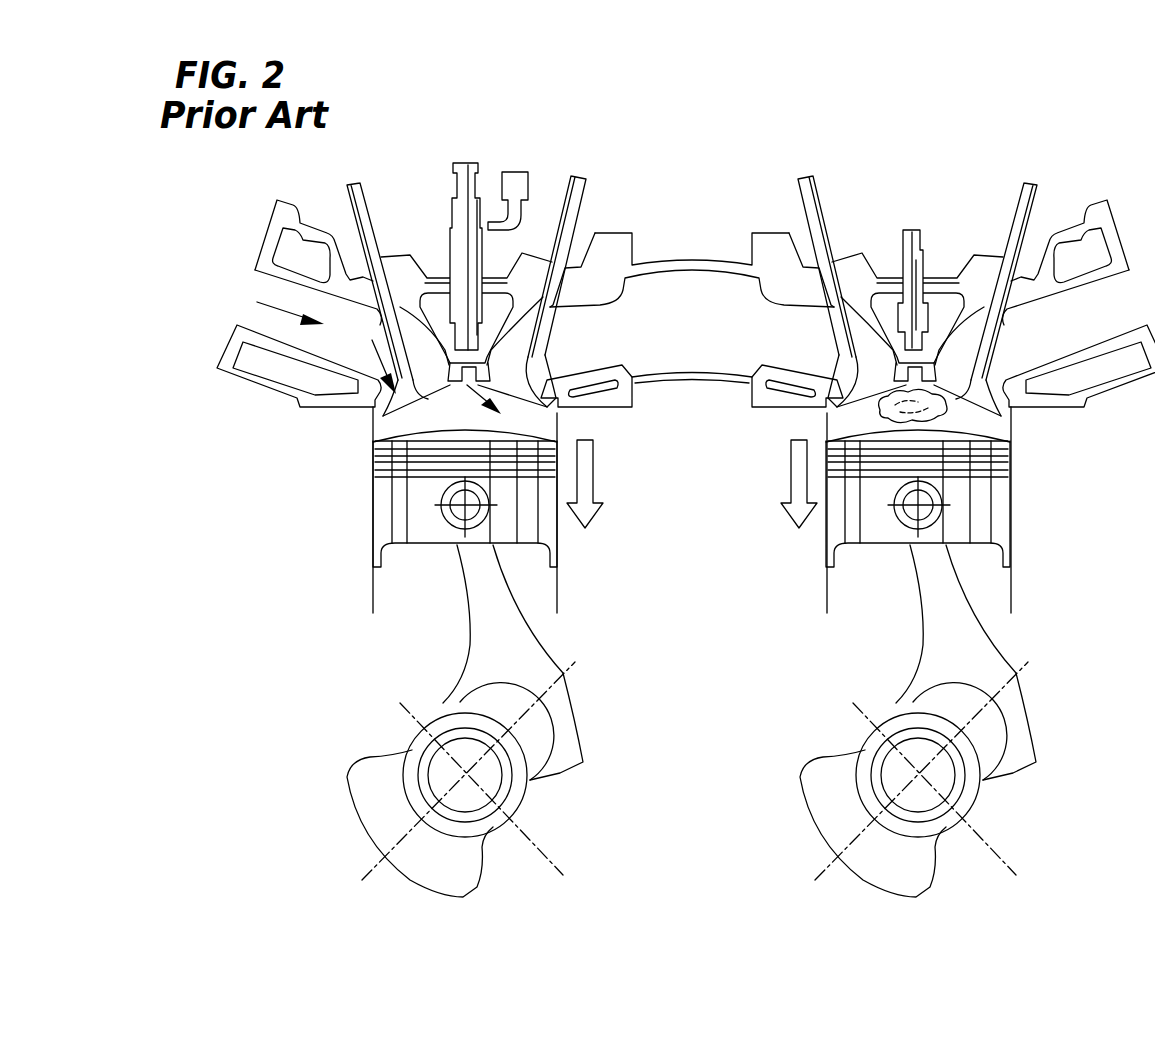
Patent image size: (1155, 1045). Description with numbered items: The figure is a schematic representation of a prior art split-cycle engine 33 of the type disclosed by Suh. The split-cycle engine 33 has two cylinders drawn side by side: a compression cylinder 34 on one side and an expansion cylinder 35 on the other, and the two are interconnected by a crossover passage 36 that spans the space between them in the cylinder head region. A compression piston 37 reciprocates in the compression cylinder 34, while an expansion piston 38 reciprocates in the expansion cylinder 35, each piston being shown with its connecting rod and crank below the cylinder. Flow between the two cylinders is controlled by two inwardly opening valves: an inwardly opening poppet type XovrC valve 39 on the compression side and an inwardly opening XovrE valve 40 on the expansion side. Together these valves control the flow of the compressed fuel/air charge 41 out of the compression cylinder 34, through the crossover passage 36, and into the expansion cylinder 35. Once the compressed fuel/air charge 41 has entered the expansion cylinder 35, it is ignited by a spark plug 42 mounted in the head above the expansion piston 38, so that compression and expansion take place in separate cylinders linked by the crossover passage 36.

The split-cycle engine 33 is at (716, 130).
The compression cylinder 34 is at (372, 598).
The expansion cylinder 35 is at (829, 600).
The crossover passage 36 is at (690, 284).
The compression piston 37 is at (423, 545).
The expansion piston 38 is at (876, 545).
The XovrC valve 39 is at (583, 202).
The XovrE valve 40 is at (820, 192).
The compressed fuel/air charge 41 is at (938, 412).
The spark plug 42 is at (915, 236).